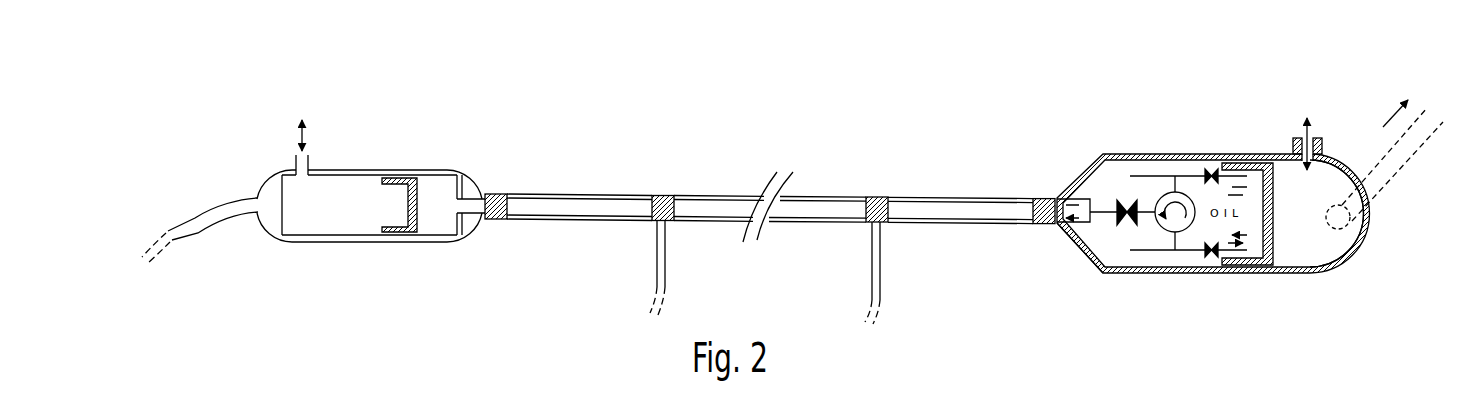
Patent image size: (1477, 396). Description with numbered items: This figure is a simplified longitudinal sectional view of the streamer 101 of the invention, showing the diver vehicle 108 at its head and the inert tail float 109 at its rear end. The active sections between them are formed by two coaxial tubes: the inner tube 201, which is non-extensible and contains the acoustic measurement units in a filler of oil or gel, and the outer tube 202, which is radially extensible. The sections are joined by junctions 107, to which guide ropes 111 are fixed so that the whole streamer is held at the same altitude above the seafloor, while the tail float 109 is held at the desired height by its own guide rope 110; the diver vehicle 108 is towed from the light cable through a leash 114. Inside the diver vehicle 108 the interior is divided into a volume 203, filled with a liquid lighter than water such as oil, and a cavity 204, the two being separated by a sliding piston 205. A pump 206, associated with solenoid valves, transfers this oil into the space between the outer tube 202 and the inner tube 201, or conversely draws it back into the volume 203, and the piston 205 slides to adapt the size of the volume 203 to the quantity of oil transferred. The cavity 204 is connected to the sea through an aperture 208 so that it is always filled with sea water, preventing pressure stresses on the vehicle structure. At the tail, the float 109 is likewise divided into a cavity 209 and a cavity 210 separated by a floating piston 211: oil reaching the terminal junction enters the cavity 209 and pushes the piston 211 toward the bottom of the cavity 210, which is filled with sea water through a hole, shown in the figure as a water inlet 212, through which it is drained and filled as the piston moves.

The streamer 101 is at (681, 148).
The junction 107 is at (880, 199).
The diver vehicle 108 is at (1220, 273).
The inert tail float 109 is at (422, 243).
The guide rope 110 is at (240, 212).
The guide rope 111 is at (666, 265).
The leash 114 is at (1400, 156).
The inner tube 201 is at (1010, 224).
The outer tube 202 is at (993, 198).
The volume 203 is at (1110, 256).
The cavity 204 is at (1339, 252).
The sliding piston 205 is at (1122, 183).
The pump 206 is at (1182, 201).
The aperture 208 is at (1316, 130).
The cavity 209 is at (449, 222).
The cavity 210 is at (317, 218).
The floating piston 211 is at (400, 178).
The water inlet 212 is at (314, 134).